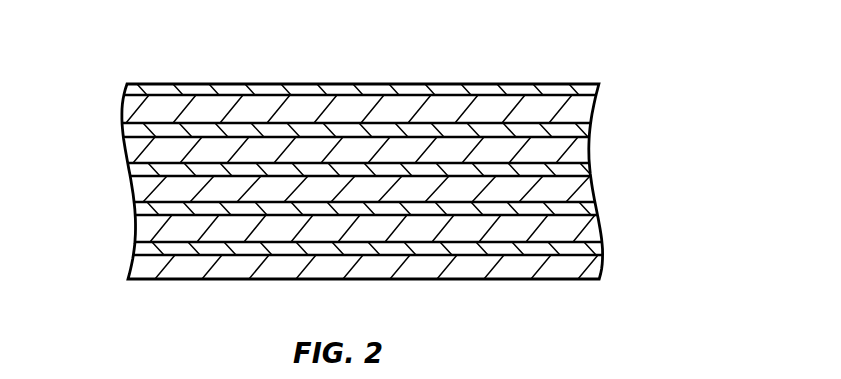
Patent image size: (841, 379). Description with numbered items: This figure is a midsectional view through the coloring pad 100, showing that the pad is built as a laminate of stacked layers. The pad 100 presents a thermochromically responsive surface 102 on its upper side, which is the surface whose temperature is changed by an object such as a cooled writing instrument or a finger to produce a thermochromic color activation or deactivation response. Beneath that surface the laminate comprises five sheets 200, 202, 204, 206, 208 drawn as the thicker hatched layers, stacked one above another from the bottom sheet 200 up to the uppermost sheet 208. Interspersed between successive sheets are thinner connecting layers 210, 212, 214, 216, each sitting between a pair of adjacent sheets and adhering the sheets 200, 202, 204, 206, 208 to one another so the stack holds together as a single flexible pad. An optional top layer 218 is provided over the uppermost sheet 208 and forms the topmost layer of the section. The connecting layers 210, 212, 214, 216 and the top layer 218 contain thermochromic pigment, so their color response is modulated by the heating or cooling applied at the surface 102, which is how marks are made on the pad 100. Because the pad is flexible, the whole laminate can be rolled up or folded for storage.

The coloring pad 100 is at (580, 57).
The thermochromically responsive surface 102 is at (438, 97).
The sheet 200 is at (130, 268).
The sheet 202 is at (135, 224).
The sheet 204 is at (134, 187).
The sheet 206 is at (130, 143).
The sheet 208 is at (128, 106).
The connecting layer 210 is at (600, 248).
The connecting layer 212 is at (594, 210).
The connecting layer 214 is at (586, 172).
The connecting layer 216 is at (584, 130).
The top layer 218 is at (495, 82).